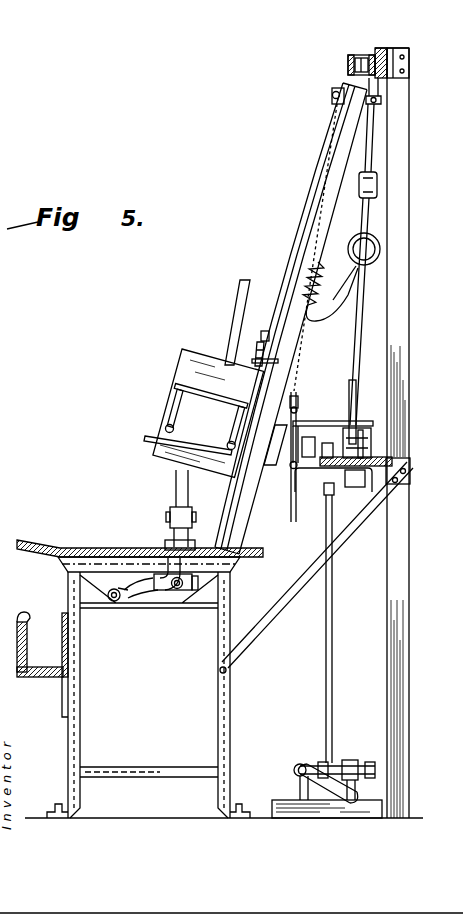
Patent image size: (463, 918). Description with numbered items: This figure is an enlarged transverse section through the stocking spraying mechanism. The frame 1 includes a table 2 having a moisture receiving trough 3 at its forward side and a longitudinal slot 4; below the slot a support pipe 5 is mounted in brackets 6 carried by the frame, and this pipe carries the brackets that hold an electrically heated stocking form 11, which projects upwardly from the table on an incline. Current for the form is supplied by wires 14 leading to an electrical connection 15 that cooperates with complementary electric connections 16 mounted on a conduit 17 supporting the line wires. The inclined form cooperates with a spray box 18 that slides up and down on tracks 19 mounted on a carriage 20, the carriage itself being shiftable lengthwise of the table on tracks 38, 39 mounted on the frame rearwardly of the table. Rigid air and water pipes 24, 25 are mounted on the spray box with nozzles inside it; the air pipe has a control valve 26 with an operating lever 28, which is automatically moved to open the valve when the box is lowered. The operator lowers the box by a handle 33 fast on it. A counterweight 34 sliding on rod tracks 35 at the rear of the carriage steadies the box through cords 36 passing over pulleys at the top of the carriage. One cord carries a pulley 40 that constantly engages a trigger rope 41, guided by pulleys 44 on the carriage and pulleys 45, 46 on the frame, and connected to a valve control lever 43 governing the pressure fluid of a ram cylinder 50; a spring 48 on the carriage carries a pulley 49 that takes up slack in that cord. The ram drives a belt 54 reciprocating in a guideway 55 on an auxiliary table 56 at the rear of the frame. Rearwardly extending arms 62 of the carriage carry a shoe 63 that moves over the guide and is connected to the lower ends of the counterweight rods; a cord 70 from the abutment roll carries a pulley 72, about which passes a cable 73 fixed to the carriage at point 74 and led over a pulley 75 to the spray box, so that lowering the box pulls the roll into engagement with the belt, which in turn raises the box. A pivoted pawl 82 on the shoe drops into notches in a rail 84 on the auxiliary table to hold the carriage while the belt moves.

The frame 1 is at (82, 653).
The table 2 is at (98, 549).
The moisture receiving trough 3 is at (27, 618).
The slot 4 is at (135, 532).
The support pipe 5 is at (177, 598).
The brackets 6 is at (194, 596).
The stocking form 11 is at (240, 300).
The wires 14 is at (160, 572).
The electrical connection 15 is at (152, 598).
The complementary electric connections 16 is at (145, 600).
The conduit 17 is at (119, 604).
The spray box 18 is at (180, 370).
The tracks 19 is at (314, 160).
The carriage 20 is at (320, 195).
The air pipe 24 is at (265, 330).
The water pipe 25 is at (246, 386).
The control valve 26 is at (256, 357).
The operating lever 28 is at (278, 362).
The handle 33 is at (150, 438).
The counterweight 34 is at (381, 243).
The rod tracks 35 is at (355, 312).
The cords 36 is at (336, 297).
The carriage track 38 is at (350, 63).
The carriage track 39 is at (289, 503).
The pulley 40 is at (300, 410).
The trigger rope 41 is at (299, 426).
The valve control lever 43 is at (333, 647).
The pulleys 44 is at (277, 462).
The pulley 45 is at (288, 470).
The pulley 46 is at (352, 520).
The spring 48 is at (318, 266).
The pulley 49 is at (350, 300).
The ram cylinder 50 is at (355, 800).
The belt 54 is at (377, 446).
The guideway 55 is at (366, 463).
The auxiliary table 56 is at (394, 482).
The rearwardly extending arms 62 is at (336, 424).
The shoe 63 is at (362, 430).
The cord 70 is at (365, 326).
The pulley 72 is at (380, 183).
The cable 73 is at (374, 148).
The fixing point 74 is at (382, 84).
The pulley 75 is at (332, 92).
The pivoted pawl 82 is at (347, 490).
The notched rail 84 is at (322, 497).